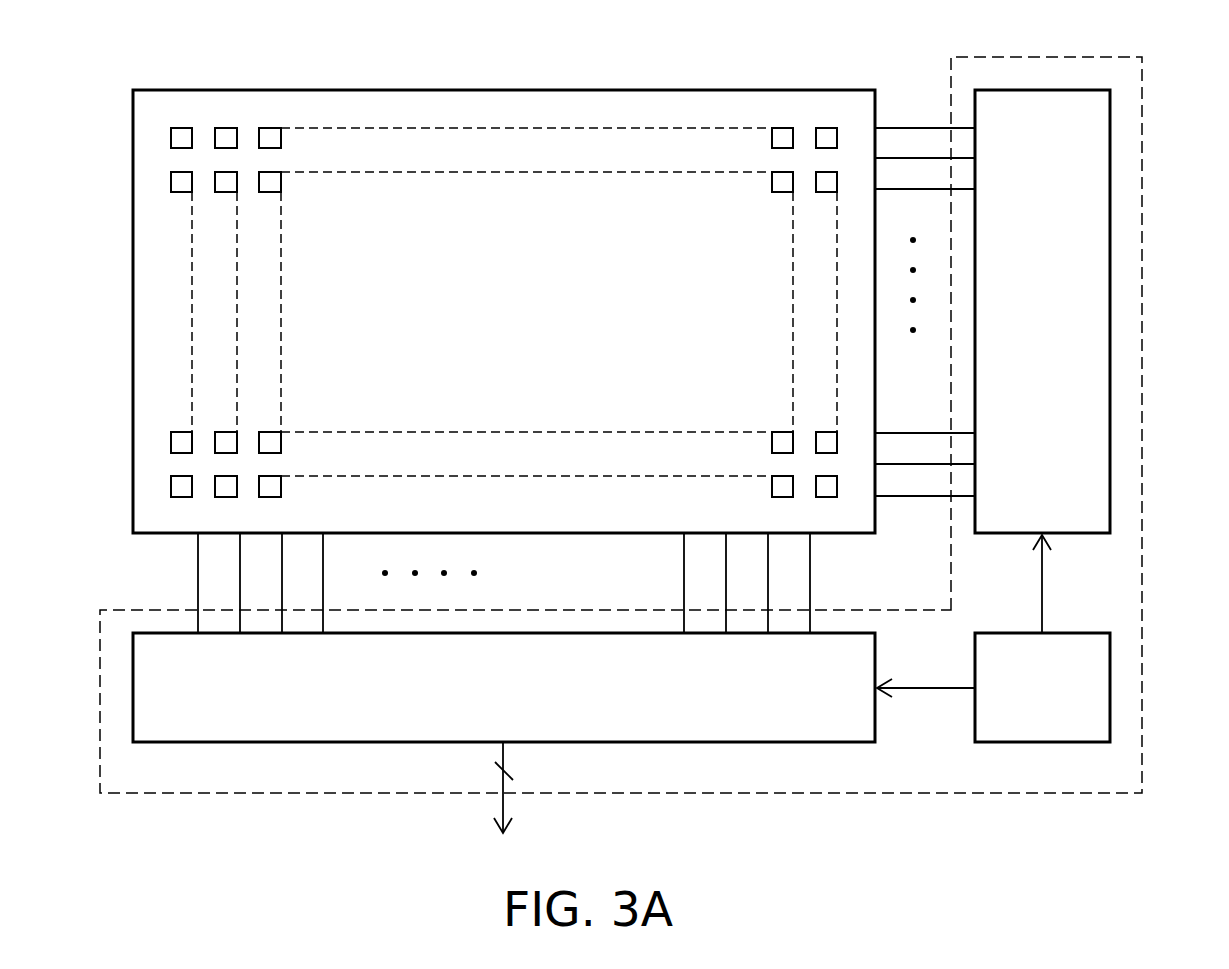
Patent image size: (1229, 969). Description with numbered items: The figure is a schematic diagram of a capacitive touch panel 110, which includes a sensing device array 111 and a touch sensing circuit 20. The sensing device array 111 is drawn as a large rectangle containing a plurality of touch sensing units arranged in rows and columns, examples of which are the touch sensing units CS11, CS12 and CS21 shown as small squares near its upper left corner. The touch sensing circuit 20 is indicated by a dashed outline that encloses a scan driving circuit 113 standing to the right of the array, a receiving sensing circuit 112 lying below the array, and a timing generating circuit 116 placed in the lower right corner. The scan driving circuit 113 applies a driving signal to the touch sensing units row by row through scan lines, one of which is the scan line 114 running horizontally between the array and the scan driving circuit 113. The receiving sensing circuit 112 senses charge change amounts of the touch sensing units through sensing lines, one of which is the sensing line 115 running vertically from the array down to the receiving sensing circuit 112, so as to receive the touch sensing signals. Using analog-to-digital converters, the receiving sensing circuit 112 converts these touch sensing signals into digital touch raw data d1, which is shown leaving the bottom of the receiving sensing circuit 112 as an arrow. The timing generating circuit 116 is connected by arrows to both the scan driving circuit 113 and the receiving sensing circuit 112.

The touch panel 110 is at (1149, 852).
The touch sensing circuit 20 is at (1142, 103).
The sensing device array 111 is at (840, 90).
The receiving sensing circuit 112 is at (876, 724).
The scan driving circuit 113 is at (1110, 150).
The scan line 114 is at (905, 128).
The sensing line 115 is at (811, 570).
The timing generating circuit 116 is at (1110, 686).
The touch sensing unit CS11 is at (180, 128).
The touch sensing unit CS12 is at (224, 128).
The touch sensing unit CS21 is at (171, 180).
The touch raw data d1 is at (501, 809).